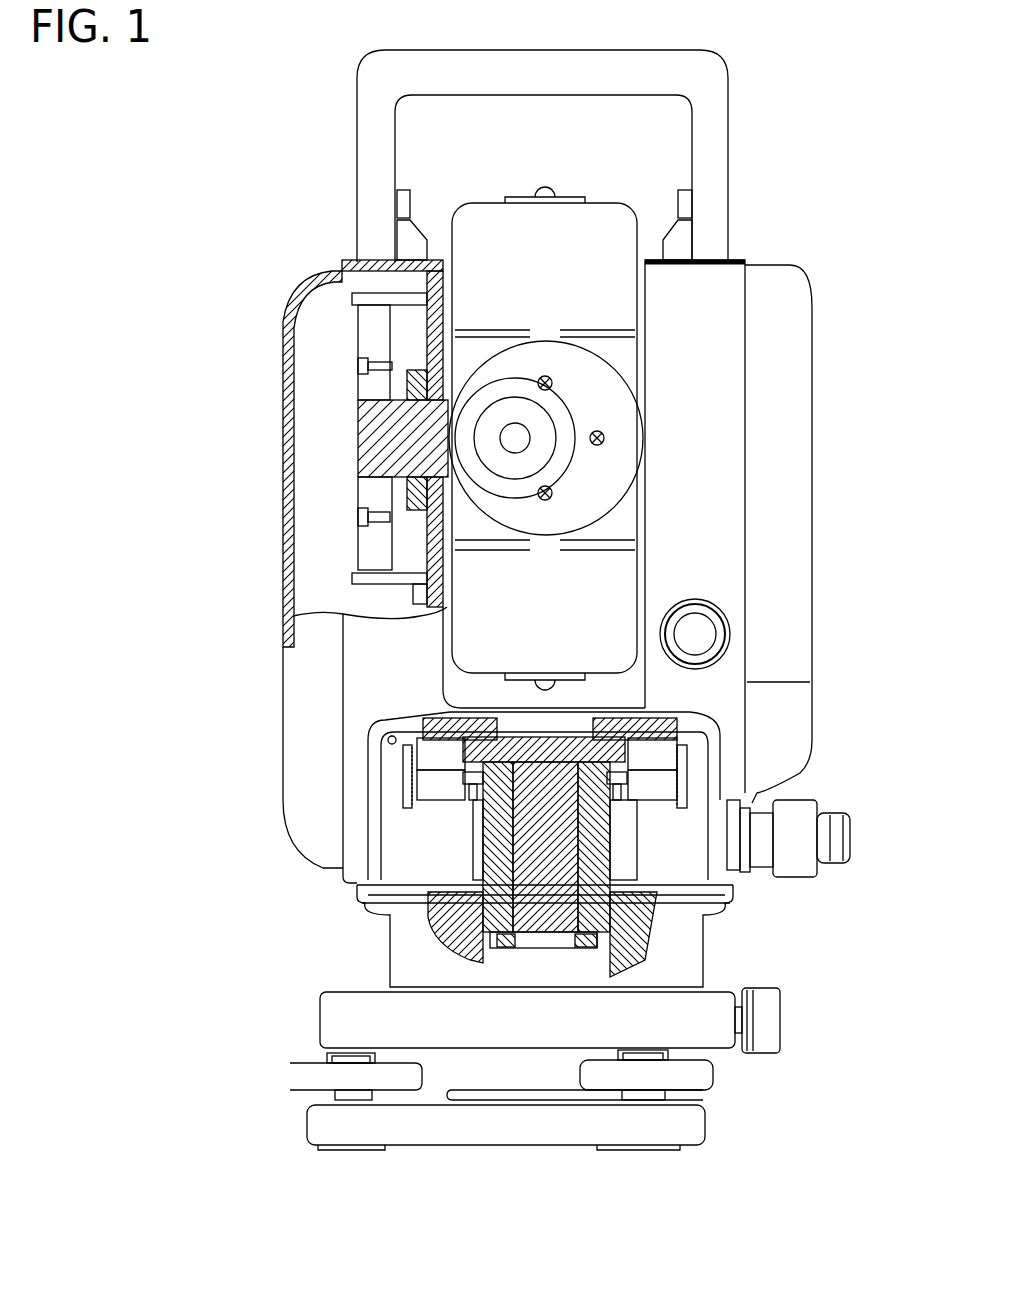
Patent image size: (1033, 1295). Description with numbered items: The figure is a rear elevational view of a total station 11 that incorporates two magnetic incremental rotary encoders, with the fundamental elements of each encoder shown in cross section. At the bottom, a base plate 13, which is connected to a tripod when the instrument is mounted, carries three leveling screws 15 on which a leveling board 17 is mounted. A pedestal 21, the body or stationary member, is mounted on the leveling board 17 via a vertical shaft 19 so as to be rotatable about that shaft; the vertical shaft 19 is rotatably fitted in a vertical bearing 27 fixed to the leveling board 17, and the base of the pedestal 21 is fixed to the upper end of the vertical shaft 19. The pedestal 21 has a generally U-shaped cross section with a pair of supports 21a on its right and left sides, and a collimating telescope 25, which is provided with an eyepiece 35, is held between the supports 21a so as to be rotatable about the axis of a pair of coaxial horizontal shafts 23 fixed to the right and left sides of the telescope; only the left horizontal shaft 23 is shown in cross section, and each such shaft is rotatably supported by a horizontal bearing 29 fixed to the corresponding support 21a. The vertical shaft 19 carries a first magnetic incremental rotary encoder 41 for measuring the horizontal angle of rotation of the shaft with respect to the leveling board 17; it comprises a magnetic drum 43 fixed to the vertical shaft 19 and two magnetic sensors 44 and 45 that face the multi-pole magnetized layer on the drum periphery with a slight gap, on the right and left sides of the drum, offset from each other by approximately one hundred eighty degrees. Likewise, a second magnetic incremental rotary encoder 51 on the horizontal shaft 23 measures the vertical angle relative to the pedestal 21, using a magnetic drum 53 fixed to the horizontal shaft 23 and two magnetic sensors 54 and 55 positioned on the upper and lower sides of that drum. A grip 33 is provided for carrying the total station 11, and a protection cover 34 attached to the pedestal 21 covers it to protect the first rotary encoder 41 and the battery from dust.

The total station 11 is at (335, 105).
The base plate 13 is at (690, 1123).
The leveling screws 15 is at (305, 1083).
The leveling board 17 is at (718, 1045).
The vertical shaft 19 is at (600, 862).
The pedestal 21 is at (343, 265).
The supports 21a is at (442, 262).
The horizontal shafts 23 is at (470, 438).
The collimating telescope 25 is at (593, 397).
The vertical bearing 27 is at (497, 830).
The horizontal bearing 29 is at (373, 392).
The grip 33 is at (717, 110).
The protection cover 34 is at (300, 280).
The eyepiece 35 is at (520, 443).
The first magnetic incremental rotary encoder 41 is at (408, 830).
The magnetic drum 43 is at (647, 790).
The magnetic sensor 44 is at (405, 770).
The magnetic sensor 45 is at (690, 783).
The second magnetic incremental rotary encoder 51 is at (332, 524).
The magnetic drum 53 is at (358, 333).
The magnetic sensor 54 is at (353, 313).
The magnetic sensor 55 is at (355, 583).